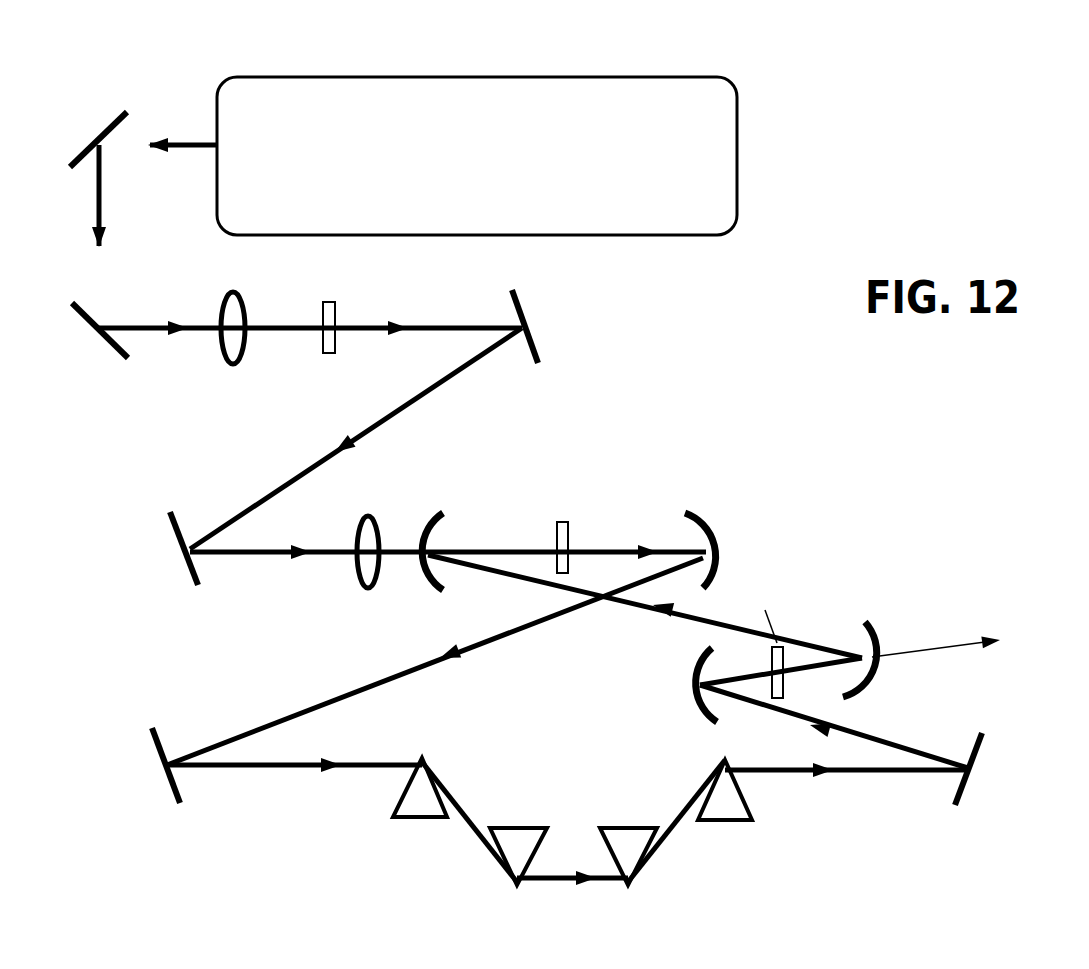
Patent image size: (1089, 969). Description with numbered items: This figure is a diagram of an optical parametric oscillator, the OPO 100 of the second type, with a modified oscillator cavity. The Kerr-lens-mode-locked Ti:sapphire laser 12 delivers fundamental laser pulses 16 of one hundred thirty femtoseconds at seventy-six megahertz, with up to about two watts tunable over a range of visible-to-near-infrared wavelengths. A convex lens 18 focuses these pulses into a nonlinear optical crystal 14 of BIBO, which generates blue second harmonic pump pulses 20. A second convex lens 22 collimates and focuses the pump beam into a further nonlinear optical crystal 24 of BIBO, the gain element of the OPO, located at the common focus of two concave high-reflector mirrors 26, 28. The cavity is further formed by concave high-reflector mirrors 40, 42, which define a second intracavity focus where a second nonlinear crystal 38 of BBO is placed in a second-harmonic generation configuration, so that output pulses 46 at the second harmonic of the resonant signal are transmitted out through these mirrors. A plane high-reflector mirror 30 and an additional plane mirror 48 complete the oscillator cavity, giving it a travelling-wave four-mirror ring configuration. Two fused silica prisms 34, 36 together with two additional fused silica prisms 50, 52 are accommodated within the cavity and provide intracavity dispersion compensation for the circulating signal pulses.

The Kerr-lens-mode-locked Ti:sapphire laser 12 is at (738, 180).
The nonlinear optical crystal 14 is at (330, 300).
The laser pulses 16 is at (153, 128).
The convex lens 18 is at (233, 288).
The pump pulses 20 is at (268, 488).
The convex lens 22 is at (368, 593).
The nonlinear optical crystal 24 is at (572, 535).
The concave high-reflector mirror 26 is at (432, 529).
The concave high-reflector mirror 28 is at (699, 531).
The plane high-reflector mirror 30 is at (952, 783).
The fused silica prism 34 is at (420, 809).
The fused silica prism 36 is at (518, 835).
The second nonlinear crystal 38 is at (790, 655).
The concave high-reflector mirror 40 is at (683, 685).
The concave high-reflector mirror 42 is at (877, 643).
The output pulses 46 is at (938, 618).
The plane mirror 48 is at (174, 796).
The fused silica prism 50 is at (628, 835).
The fused silica prism 52 is at (725, 811).
The OPO 100 is at (820, 464).